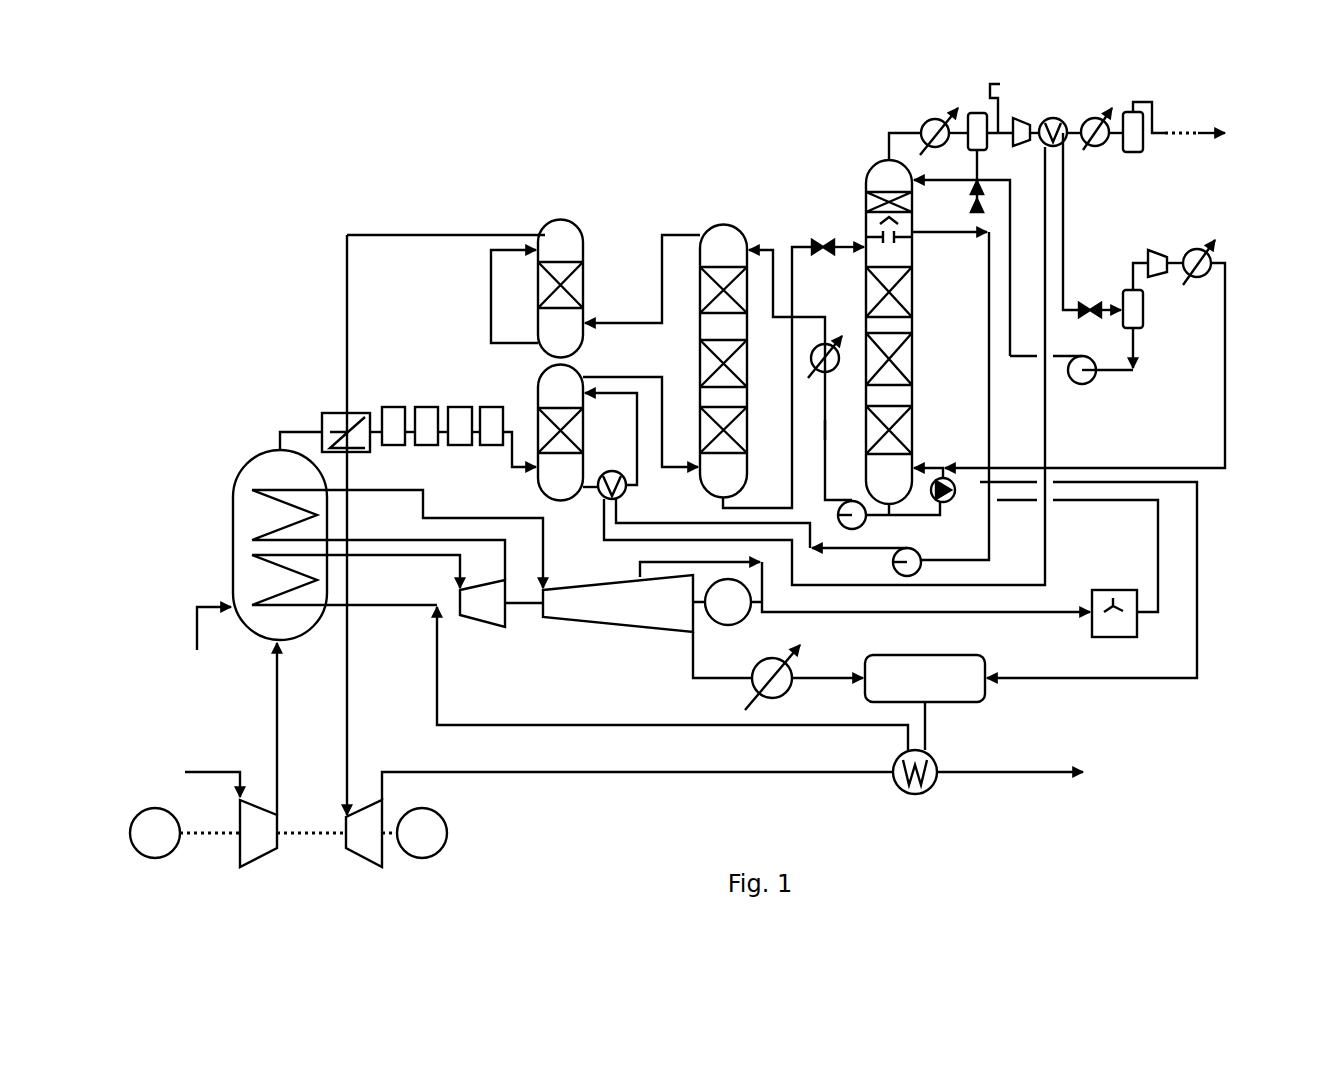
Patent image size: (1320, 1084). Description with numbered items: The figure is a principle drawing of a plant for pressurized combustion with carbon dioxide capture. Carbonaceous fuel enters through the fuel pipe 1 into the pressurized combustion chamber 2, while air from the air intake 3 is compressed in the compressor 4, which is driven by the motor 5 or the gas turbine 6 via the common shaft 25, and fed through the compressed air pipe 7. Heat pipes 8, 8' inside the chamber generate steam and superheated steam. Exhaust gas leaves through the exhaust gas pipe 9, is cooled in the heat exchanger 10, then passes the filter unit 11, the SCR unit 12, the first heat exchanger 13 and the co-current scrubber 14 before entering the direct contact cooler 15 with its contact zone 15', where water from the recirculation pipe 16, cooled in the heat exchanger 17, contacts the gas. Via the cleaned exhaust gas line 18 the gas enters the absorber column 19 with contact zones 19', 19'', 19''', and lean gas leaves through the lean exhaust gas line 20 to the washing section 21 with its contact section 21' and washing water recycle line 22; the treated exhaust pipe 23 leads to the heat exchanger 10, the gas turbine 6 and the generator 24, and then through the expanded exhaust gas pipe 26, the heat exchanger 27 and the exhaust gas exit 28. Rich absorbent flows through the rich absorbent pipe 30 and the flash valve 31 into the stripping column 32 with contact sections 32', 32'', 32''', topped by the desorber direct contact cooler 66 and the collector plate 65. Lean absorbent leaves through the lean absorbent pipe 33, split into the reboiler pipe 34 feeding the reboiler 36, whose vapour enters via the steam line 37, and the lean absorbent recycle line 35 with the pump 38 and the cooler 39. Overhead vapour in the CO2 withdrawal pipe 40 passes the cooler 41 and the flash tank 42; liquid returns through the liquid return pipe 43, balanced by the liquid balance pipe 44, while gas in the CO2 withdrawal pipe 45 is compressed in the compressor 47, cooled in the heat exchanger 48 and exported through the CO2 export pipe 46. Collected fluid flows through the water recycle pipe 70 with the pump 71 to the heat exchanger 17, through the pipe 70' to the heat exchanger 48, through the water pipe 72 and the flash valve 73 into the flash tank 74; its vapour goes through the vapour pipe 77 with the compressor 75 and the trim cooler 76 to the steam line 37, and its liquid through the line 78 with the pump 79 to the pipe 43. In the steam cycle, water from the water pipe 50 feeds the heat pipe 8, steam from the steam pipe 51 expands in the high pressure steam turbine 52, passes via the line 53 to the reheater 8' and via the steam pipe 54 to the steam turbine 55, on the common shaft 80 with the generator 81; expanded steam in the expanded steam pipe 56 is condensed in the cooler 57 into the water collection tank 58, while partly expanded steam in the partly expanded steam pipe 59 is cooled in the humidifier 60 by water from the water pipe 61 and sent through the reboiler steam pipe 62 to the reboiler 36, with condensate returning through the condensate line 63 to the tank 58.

The fuel pipe 1 is at (197, 648).
The combustion chamber 2 is at (259, 632).
The air intake 3 is at (190, 768).
The compressor 4 is at (244, 846).
The motor 5 is at (144, 847).
The gas turbine 6 is at (349, 849).
The compressed air pipe 7 is at (262, 710).
The heat pipe 8 is at (302, 571).
The heat pipe (steam reheater) 8' is at (334, 535).
The exhaust gas pipe 9 is at (270, 438).
The heat exchanger 10 is at (330, 410).
The filter unit 11 is at (393, 405).
The Selective Catalytic Reduction (SCR) unit 12 is at (452, 382).
The first heat exchanger 13 is at (457, 403).
The co-current scrubber 14 is at (502, 383).
The counter-current scrubber or direct contact cooler 15 is at (560, 433).
The contact zone 15' is at (539, 401).
The recirculation pipe 16 is at (633, 463).
The heat exchanger 17 is at (606, 536).
The cleaned exhaust gas line 18 is at (653, 470).
The absorber column 19 is at (723, 361).
The contact zone 19' is at (744, 415).
The contact zone 19'' is at (687, 363).
The contact zone 19''' is at (677, 290).
The lean exhaust gas line 20 is at (657, 248).
The washing section 21 is at (560, 289).
The contact section 21' is at (560, 240).
The washing water recycle line 22 is at (491, 312).
The treated exhaust pipe 23 is at (343, 266).
The generator 24 is at (406, 847).
The common shaft 25 is at (318, 825).
The expanded exhaust gas pipe 26 is at (580, 780).
The heat exchanger 27 is at (918, 797).
The exhaust gas exit 28 is at (1085, 790).
The rich absorbent pipe 30 is at (790, 495).
The flash valve 31 is at (826, 240).
The stripping column 32 is at (889, 332).
The contact section 32' is at (923, 429).
The contact section 32'' is at (921, 362).
The contact section 32''' is at (925, 298).
The lean absorbent pipe 33 is at (878, 518).
The first lean absorbent reboiler pipe 34 is at (933, 517).
The lean absorbent recycle line 35 is at (832, 443).
The reboiler 36 is at (957, 491).
The steam line 37 is at (918, 466).
The pump 38 is at (845, 503).
The cooler 39 is at (840, 343).
The CO2 withdrawal pipe 40 is at (880, 128).
The cooler 41 is at (972, 90).
The flash tank 42 is at (990, 140).
The liquid return pipe 43 is at (955, 183).
The liquid balance pipe 44 is at (978, 203).
The CO2 withdrawal pipe 45 is at (1025, 115).
The CO2 export pipe 46 is at (1203, 140).
The compressor 47 is at (1040, 98).
The heat exchanger 48 is at (1062, 140).
The water pipe 50 is at (545, 718).
The steam pipe 51 is at (434, 556).
The high pressure steam turbine 52 is at (469, 616).
The line 53 is at (432, 490).
The steam pipe 54 is at (447, 538).
The steam turbine (intermediate and low pressure sections) 55 is at (650, 614).
The expanded steam pipe 56 is at (660, 690).
The cooler 57 is at (787, 666).
The water collection tank 58 is at (911, 692).
The partly expanded steam pipe 59 is at (985, 615).
The humidifier 60 is at (1133, 623).
The water pipe 61 is at (1057, 598).
The reboiler steam pipe 62 is at (1163, 586).
The condensate line 63 is at (1203, 537).
The collector plate 65 is at (866, 230).
The desorber direct contact cooler 66 is at (875, 187).
The water recycle pipe 70 is at (950, 396).
The pipe 70' is at (1083, 559).
The pump 71 is at (895, 562).
The water pipe 72 is at (1065, 232).
The flash valve 73 is at (1092, 296).
The flash tank 74 is at (1133, 318).
The compressor 75 is at (1170, 248).
The trim cooler 76 is at (1237, 228).
The vapour pipe 77 is at (1220, 385).
The line 78 is at (1135, 372).
The pump 79 is at (1068, 382).
The common shaft 80 is at (520, 604).
The generator 81 is at (714, 615).